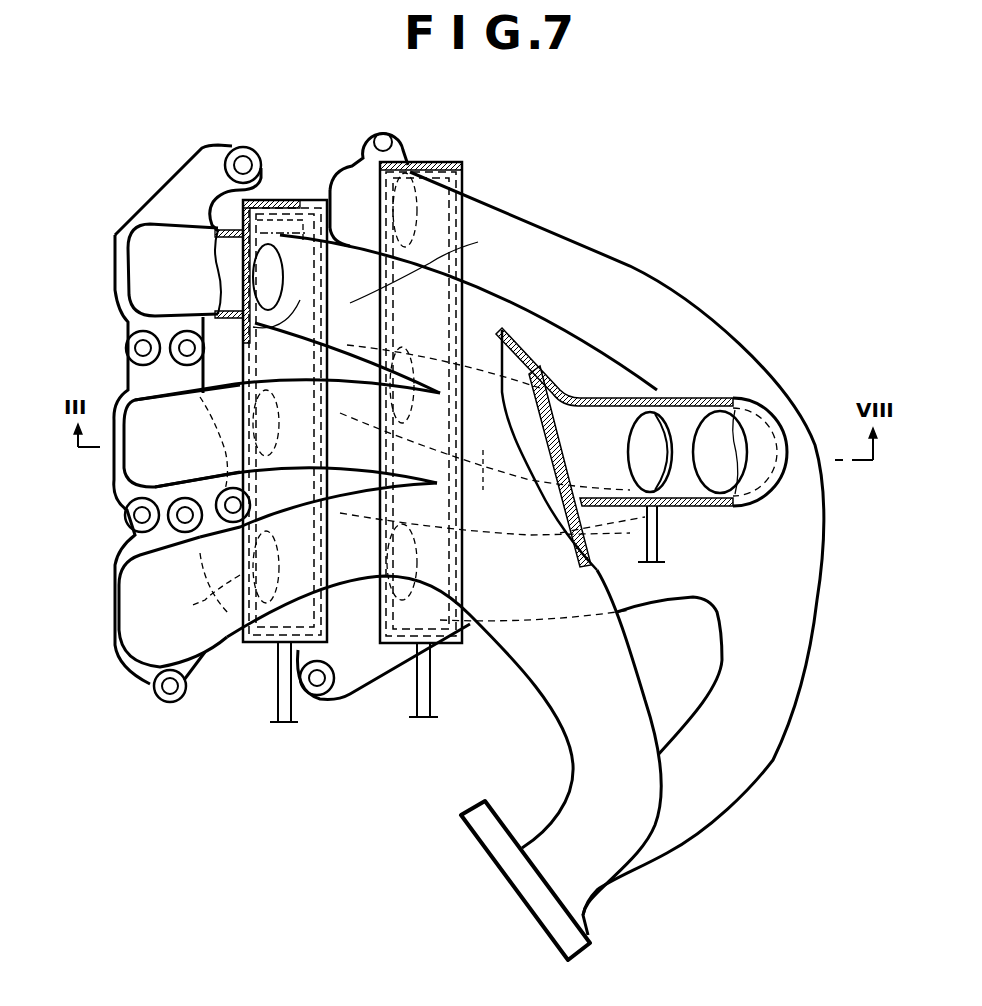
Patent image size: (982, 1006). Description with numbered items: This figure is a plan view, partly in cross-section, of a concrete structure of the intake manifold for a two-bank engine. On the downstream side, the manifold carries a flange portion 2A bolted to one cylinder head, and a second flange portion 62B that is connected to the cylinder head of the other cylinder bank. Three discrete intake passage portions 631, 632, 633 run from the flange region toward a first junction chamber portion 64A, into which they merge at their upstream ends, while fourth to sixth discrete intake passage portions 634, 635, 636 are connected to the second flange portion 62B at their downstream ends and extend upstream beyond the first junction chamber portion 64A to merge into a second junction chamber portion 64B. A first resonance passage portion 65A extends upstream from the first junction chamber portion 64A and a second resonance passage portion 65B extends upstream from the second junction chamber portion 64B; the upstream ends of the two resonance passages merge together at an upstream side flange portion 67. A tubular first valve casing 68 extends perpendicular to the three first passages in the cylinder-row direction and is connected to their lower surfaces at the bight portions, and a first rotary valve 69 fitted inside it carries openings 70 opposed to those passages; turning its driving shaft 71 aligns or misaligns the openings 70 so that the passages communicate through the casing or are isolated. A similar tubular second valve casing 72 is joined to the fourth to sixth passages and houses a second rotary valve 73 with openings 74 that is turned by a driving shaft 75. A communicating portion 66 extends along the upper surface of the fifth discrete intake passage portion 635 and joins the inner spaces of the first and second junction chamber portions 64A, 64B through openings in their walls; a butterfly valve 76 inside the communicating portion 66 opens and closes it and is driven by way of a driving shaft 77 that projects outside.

The cylinder head flange 2A is at (147, 547).
The openings 70 is at (247, 270).
The first valve casing 68 is at (296, 200).
The first rotary valve 69 is at (280, 220).
The second valve casing 72 is at (453, 155).
The second rotary valve 73 is at (440, 248).
The openings 74 is at (418, 157).
The driving shaft 71 is at (278, 707).
The driving shaft 75 is at (432, 700).
The driving shaft 77 is at (652, 545).
The butterfly valve 76 is at (660, 473).
The communicating portion 66 is at (677, 412).
The first junction chamber portion 64A is at (560, 455).
The second junction chamber portion 64B is at (743, 378).
The first resonance passage portion 65A is at (623, 680).
The second resonance passage portion 65B is at (747, 765).
The upstream side flange portion 67 is at (518, 870).
The second flange portion 62B is at (353, 676).
The first discrete intake passage portion 631 is at (240, 640).
The second discrete intake passage portion 632 is at (382, 406).
The third discrete intake passage portion 633 is at (443, 306).
The fourth discrete intake passage portion 634 is at (485, 612).
The fifth discrete intake passage portion 635 is at (392, 502).
The sixth discrete intake passage portion 636 is at (607, 263).